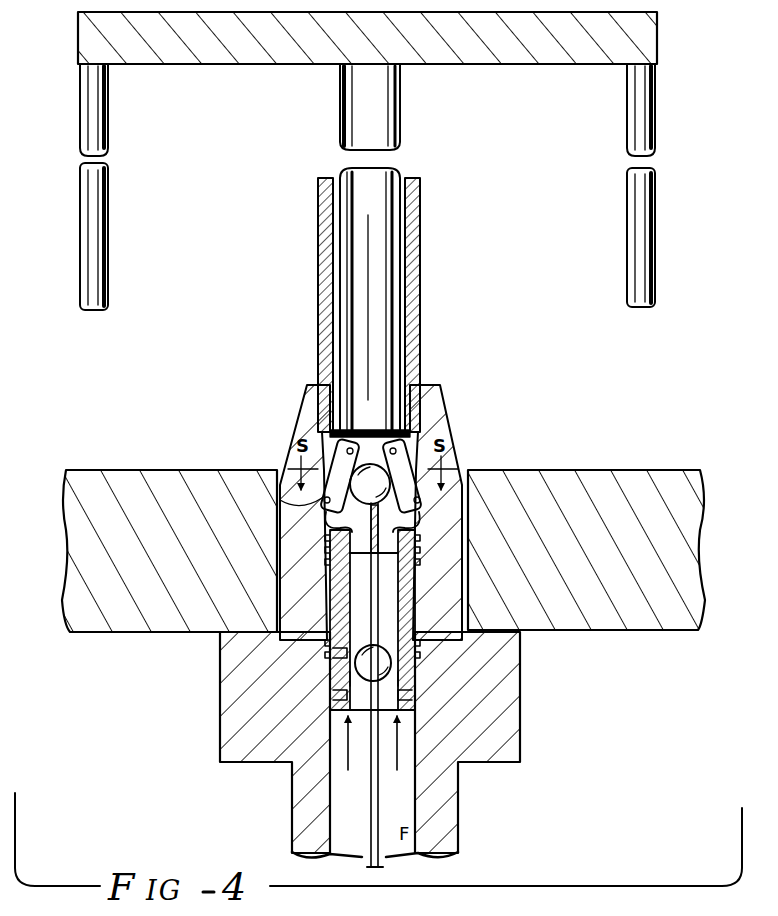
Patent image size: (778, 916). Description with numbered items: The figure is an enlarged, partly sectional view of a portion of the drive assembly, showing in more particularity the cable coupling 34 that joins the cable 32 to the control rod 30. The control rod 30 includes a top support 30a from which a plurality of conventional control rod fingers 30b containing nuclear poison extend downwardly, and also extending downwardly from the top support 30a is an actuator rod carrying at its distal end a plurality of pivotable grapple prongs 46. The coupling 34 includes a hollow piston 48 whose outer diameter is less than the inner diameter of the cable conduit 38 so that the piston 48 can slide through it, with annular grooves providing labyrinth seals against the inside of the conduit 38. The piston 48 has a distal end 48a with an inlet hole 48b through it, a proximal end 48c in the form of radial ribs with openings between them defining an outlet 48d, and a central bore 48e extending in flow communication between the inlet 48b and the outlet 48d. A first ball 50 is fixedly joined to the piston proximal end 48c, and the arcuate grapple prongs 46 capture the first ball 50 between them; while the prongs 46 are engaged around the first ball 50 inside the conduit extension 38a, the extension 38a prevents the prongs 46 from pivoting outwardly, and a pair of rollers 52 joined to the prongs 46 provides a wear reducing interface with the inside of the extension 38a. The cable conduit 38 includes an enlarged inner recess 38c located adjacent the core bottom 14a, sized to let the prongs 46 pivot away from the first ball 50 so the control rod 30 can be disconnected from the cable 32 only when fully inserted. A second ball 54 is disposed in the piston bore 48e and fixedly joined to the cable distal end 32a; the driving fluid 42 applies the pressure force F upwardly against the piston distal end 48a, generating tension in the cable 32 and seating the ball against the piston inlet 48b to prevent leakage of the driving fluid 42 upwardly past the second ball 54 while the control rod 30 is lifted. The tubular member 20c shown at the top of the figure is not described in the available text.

The core bottom 14a is at (693, 467).
The tubular member 20c is at (400, 97).
The control rod 30 is at (538, 68).
The top support 30a is at (255, 68).
The control rod fingers 30b is at (110, 221).
The cable 32 is at (372, 836).
The cable distal end 32a is at (418, 690).
The coupling 34 is at (328, 620).
The cable conduit 38 is at (298, 845).
The conduit extension 38a is at (422, 262).
The enlarged inner recess 38c is at (371, 512).
The driving fluid 42 is at (340, 748).
The grapple prongs 46 is at (410, 455).
The hollow piston 48 is at (422, 592).
The piston distal end 48a is at (410, 712).
The inlet hole 48b is at (345, 700).
The piston proximal end 48c is at (467, 514).
The outlet 48d is at (374, 578).
The central bore 48e is at (337, 660).
The first ball 50 is at (371, 458).
The rollers 52 is at (280, 500).
The second ball 54 is at (400, 656).